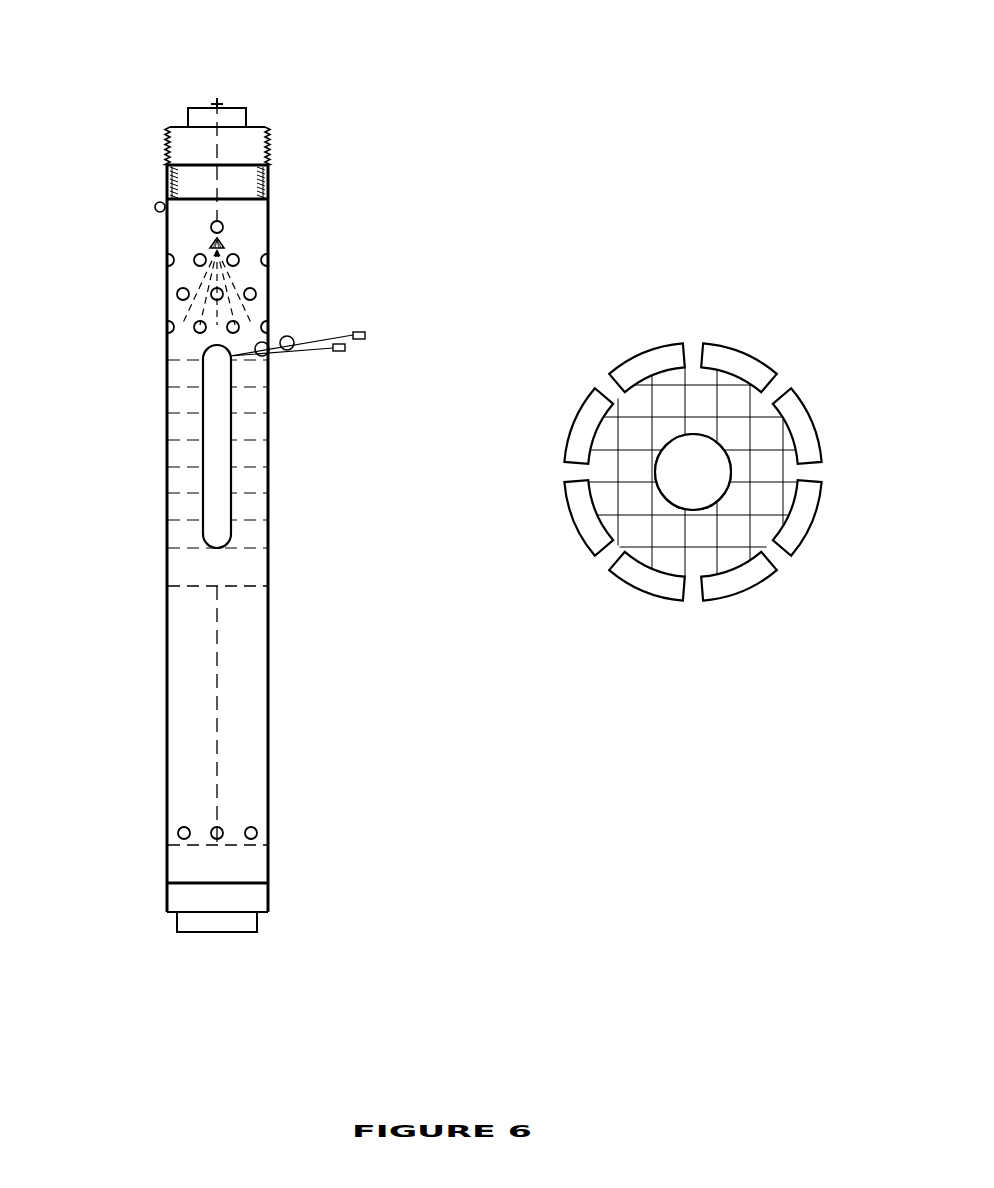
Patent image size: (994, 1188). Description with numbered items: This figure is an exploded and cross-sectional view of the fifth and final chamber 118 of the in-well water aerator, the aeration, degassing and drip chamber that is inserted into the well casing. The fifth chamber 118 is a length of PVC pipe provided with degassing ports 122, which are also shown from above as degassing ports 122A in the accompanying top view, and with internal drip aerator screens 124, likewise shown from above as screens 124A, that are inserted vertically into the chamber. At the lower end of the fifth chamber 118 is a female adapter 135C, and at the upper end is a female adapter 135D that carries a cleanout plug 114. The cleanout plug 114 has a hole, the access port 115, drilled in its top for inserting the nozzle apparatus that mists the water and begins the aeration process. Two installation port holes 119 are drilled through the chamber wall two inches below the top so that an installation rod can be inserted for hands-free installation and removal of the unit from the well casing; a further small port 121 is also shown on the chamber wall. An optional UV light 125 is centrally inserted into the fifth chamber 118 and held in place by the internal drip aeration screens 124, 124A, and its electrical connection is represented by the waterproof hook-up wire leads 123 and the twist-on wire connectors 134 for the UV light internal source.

The cleanout plug 114 is at (273, 139).
The access port 115 is at (228, 101).
The fifth chamber 118 is at (272, 677).
The installation port holes 119 is at (225, 226).
The side port 121 is at (153, 205).
The degassing ports 122 is at (241, 325).
The degassing ports (top view) 122A is at (805, 470).
The waterproof hook-up wire leads 123 is at (293, 338).
The internal drip aerator screens 124 is at (167, 548).
The internal drip aerator screens (top view) 124A is at (627, 455).
The UV light 125 is at (235, 430).
The twist on wire connectors for UV light internal source 134 is at (346, 352).
The female adapter (bottom) 135C is at (264, 925).
The female adapter (top) 135D is at (272, 178).